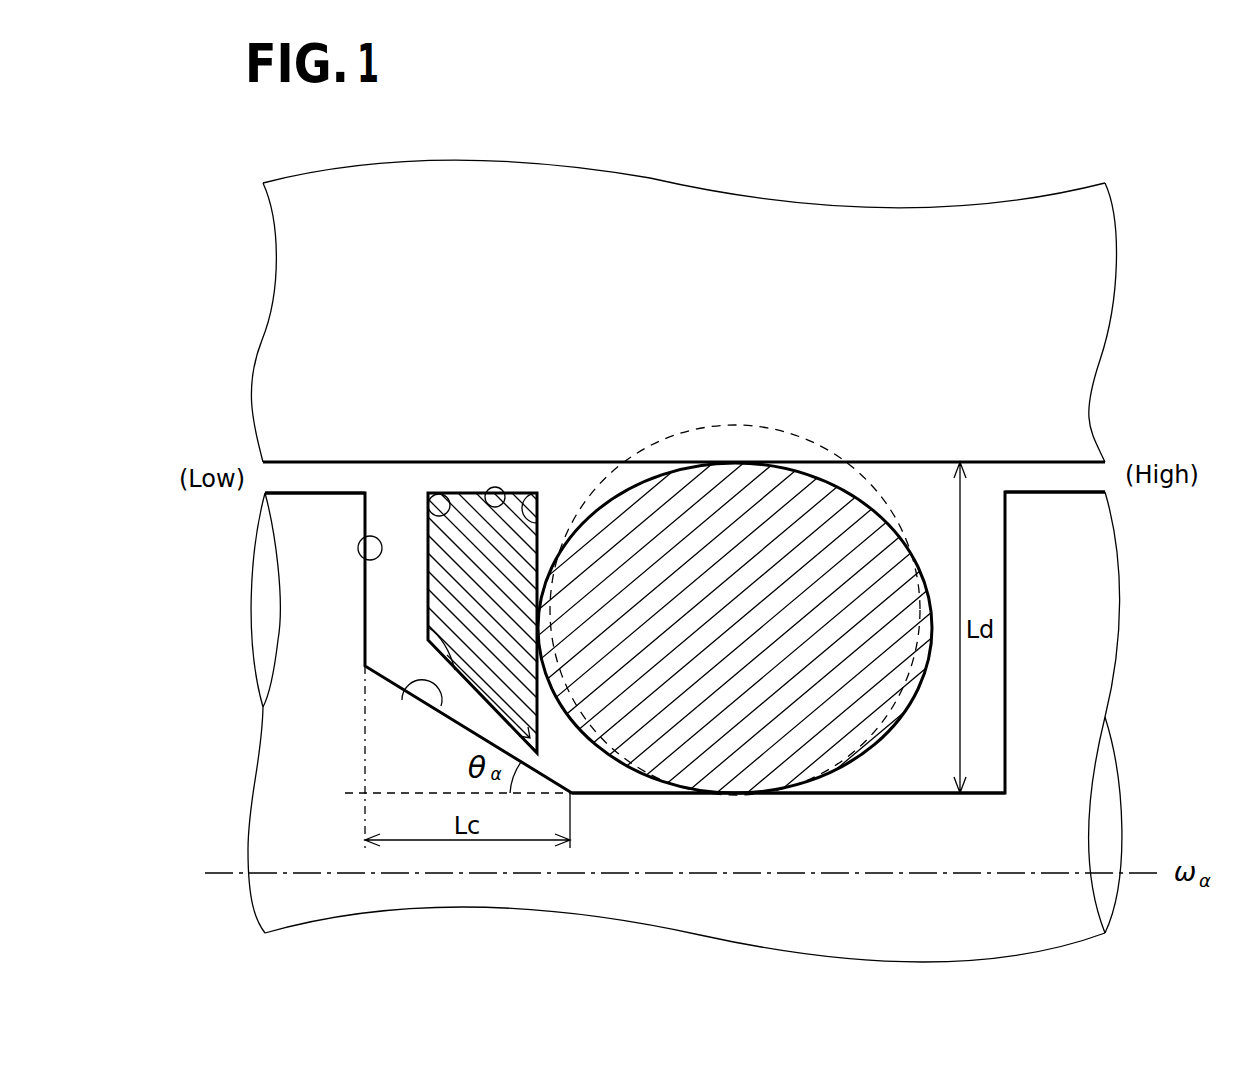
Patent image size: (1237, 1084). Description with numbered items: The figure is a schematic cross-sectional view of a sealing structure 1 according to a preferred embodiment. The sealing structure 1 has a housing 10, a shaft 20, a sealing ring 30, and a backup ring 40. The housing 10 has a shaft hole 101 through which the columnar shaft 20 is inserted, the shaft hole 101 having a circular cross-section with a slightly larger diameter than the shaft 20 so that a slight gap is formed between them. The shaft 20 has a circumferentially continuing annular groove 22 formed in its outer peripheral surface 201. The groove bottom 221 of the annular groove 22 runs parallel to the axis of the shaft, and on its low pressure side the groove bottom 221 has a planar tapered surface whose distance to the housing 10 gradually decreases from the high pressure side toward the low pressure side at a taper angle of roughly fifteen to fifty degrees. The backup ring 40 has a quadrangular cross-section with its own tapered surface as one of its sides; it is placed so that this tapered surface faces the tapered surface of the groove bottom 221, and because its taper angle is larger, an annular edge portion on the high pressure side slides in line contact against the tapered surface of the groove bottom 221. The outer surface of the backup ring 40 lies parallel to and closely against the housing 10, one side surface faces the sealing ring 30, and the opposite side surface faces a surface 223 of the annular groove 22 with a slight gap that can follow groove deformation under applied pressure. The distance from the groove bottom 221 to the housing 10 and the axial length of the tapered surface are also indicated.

The sealing structure 1 is at (1166, 193).
The housing 10 is at (1108, 257).
The shaft hole 101 is at (1216, 561).
The shaft 20 is at (1105, 650).
The outer peripheral surface 201 is at (325, 490).
The annular groove 22 is at (988, 533).
The groove bottom 221 is at (978, 792).
The surface 223 is at (365, 565).
The sealing ring 30 is at (722, 425).
The backup ring 40 is at (467, 490).